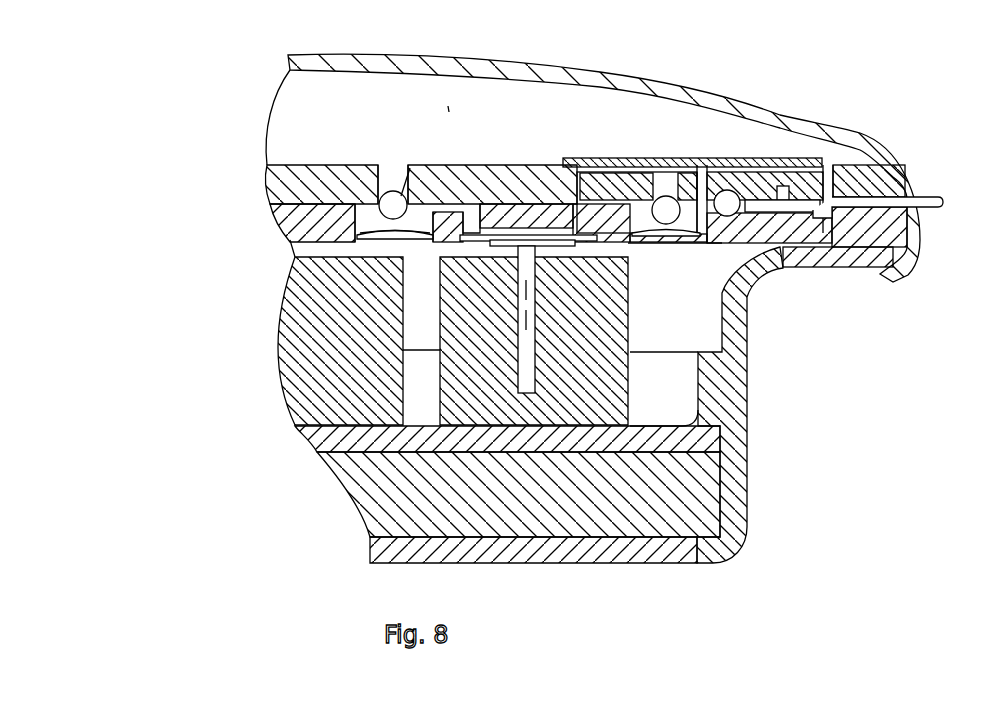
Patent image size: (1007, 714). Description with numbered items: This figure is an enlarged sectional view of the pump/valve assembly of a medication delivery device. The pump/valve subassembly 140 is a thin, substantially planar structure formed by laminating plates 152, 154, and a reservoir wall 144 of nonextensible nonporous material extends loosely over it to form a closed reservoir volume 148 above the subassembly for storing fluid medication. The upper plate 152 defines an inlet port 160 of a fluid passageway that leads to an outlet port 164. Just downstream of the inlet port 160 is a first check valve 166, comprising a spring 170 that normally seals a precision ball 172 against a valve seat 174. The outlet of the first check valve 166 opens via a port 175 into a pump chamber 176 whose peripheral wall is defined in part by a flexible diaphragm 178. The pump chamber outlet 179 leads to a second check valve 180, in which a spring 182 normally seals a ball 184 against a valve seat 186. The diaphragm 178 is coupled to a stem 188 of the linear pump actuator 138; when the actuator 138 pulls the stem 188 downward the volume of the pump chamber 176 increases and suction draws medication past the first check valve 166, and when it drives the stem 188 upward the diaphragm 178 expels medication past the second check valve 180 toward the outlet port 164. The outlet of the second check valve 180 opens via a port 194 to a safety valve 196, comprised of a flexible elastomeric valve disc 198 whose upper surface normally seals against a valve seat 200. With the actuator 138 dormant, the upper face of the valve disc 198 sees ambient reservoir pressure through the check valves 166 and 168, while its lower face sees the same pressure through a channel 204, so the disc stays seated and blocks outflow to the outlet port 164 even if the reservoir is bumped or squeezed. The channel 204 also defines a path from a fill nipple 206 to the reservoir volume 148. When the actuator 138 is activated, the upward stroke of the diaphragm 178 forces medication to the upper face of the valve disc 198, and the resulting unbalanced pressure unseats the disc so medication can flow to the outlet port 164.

The pump actuator 138 is at (629, 392).
The pump/valve subassembly 140 is at (268, 182).
The reservoir wall 144 is at (526, 67).
The reservoir volume 148 is at (386, 80).
The upper plate 152 is at (274, 186).
The plate 154 is at (288, 223).
The inlet port 160 is at (394, 190).
The outlet port 164 is at (720, 229).
The first check valve 166 is at (411, 172).
The check valve 168 is at (400, 166).
The spring 170 is at (368, 225).
The precision ball 172 is at (403, 203).
The valve seat 174 is at (386, 176).
The port 175 is at (481, 236).
The pump chamber 176 is at (500, 238).
The flexible diaphragm 178 is at (538, 240).
The pump chamber outlet 179 is at (588, 165).
The second check valve 180 is at (672, 178).
The spring 182 is at (634, 234).
The ball 184 is at (668, 204).
The valve seat 186 is at (656, 180).
The stem 188 is at (530, 345).
The port 194 is at (781, 188).
The safety valve 196 is at (782, 212).
The valve disc 198 is at (794, 207).
The valve seat 200 is at (768, 198).
The channel 204 is at (828, 162).
The fill nipple 206 is at (941, 197).